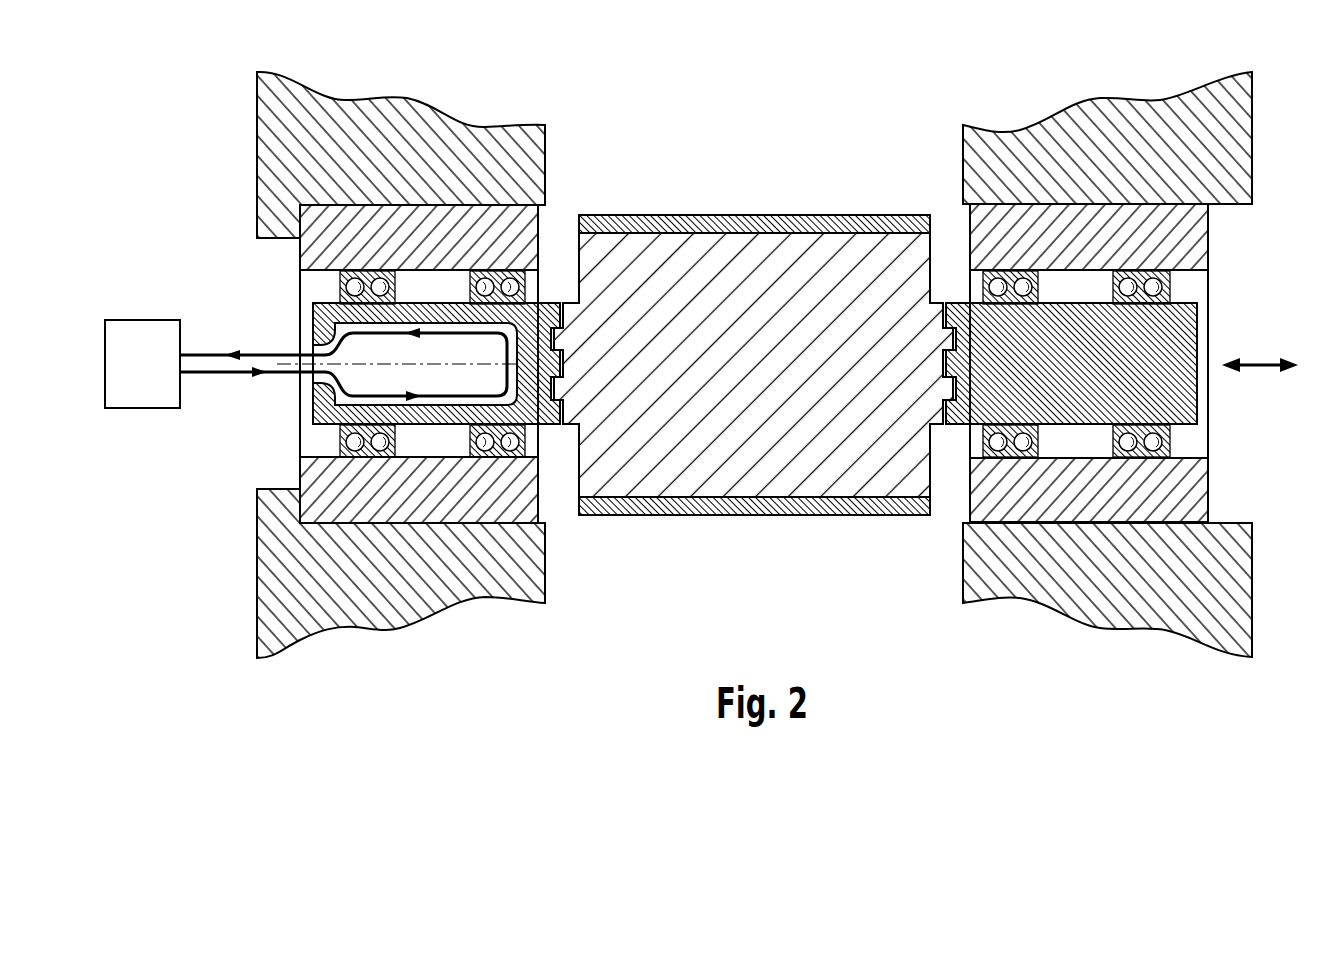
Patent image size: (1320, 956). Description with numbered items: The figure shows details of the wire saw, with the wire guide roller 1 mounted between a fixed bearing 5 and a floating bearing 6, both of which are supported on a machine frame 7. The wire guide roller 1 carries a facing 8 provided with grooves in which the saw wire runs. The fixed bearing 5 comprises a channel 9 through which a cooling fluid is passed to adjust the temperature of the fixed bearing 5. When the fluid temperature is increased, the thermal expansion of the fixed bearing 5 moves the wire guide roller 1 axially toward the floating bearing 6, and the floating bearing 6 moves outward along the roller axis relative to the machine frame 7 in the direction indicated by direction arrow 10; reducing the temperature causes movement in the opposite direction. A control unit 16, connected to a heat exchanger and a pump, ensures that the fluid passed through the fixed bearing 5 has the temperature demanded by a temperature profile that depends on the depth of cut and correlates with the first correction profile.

The wire guide roller 1 is at (710, 263).
The fixed bearing 5 is at (432, 287).
The floating bearing 6 is at (1085, 287).
The machine frame 7 is at (278, 118).
The facing 8 is at (782, 222).
The channel 9 is at (330, 394).
The direction arrow 10 is at (1262, 365).
The control unit 16 is at (146, 395).